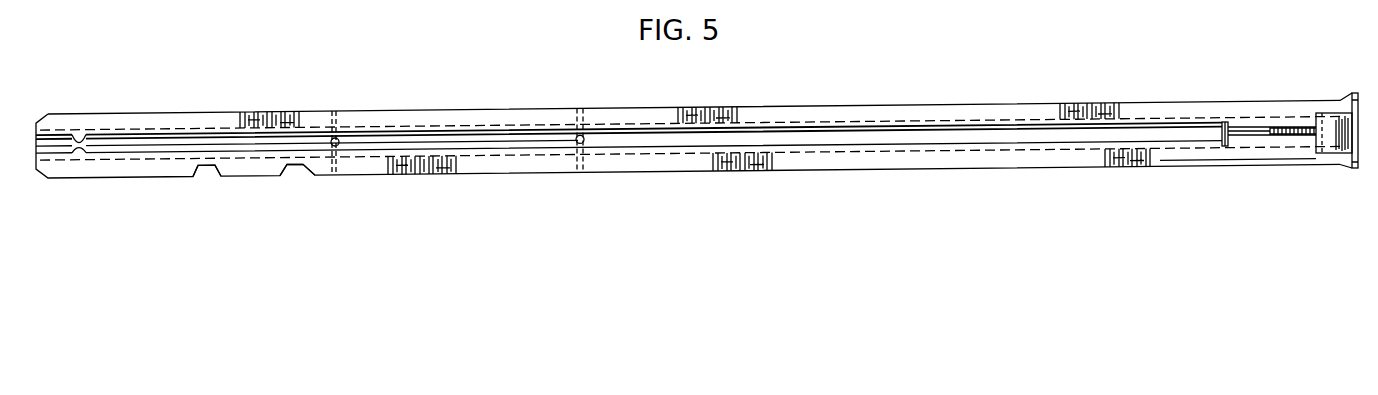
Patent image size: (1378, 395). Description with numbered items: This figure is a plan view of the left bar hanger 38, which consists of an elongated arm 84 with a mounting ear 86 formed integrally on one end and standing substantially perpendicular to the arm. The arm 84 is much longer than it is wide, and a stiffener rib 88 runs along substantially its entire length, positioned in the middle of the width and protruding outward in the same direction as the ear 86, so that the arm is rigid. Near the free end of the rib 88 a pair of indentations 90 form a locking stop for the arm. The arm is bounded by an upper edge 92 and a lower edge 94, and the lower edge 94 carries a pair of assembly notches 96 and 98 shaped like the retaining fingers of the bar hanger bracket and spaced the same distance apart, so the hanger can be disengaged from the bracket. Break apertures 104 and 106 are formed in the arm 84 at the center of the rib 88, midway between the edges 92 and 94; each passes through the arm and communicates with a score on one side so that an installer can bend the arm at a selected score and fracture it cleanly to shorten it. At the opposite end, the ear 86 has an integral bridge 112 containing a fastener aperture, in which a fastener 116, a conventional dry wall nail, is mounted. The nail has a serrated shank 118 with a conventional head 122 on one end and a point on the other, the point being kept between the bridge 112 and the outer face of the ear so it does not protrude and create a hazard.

The left bar hanger 38 is at (646, 107).
The elongated arm 84 is at (560, 158).
The mounting ear 86 is at (1369, 68).
The stiffener rib 88 is at (442, 140).
The indentations 90 is at (79, 140).
The upper edge 92 is at (173, 120).
The lower edge 94 is at (473, 163).
The assembly notch 96 is at (300, 172).
The assembly notch 98 is at (207, 172).
The break aperture 104 is at (578, 138).
The break aperture 106 is at (340, 142).
The bridge 112 is at (1330, 154).
The fastener 116 is at (1263, 126).
The shank 118 is at (1250, 136).
The head 122 is at (1220, 133).